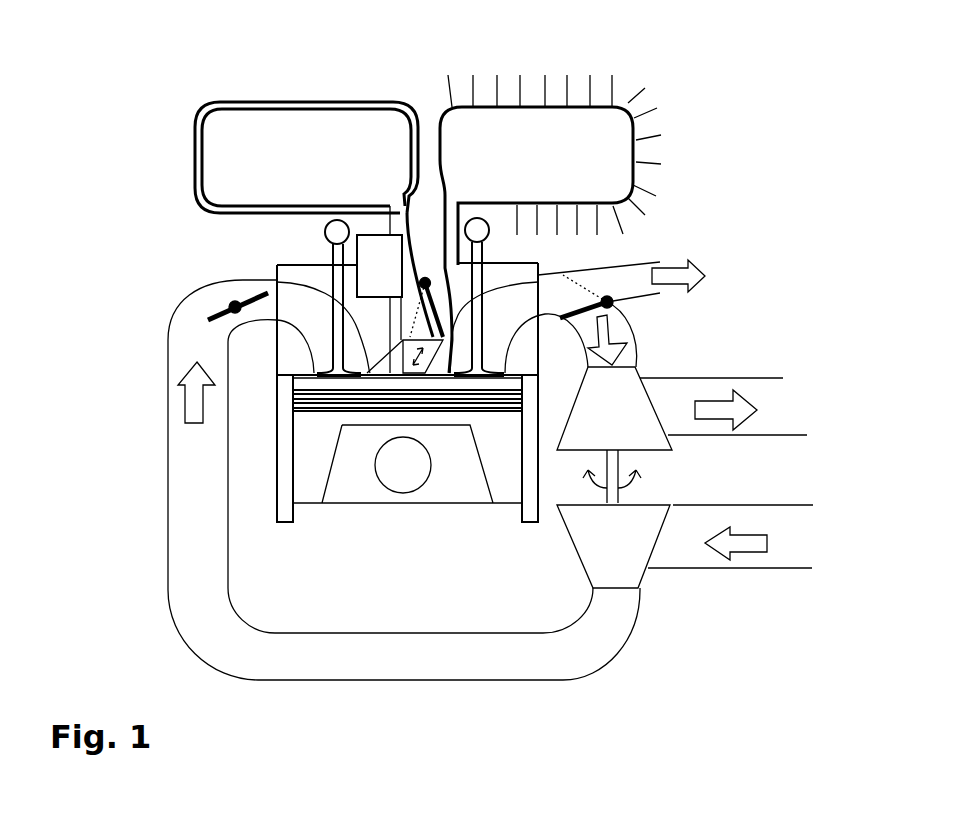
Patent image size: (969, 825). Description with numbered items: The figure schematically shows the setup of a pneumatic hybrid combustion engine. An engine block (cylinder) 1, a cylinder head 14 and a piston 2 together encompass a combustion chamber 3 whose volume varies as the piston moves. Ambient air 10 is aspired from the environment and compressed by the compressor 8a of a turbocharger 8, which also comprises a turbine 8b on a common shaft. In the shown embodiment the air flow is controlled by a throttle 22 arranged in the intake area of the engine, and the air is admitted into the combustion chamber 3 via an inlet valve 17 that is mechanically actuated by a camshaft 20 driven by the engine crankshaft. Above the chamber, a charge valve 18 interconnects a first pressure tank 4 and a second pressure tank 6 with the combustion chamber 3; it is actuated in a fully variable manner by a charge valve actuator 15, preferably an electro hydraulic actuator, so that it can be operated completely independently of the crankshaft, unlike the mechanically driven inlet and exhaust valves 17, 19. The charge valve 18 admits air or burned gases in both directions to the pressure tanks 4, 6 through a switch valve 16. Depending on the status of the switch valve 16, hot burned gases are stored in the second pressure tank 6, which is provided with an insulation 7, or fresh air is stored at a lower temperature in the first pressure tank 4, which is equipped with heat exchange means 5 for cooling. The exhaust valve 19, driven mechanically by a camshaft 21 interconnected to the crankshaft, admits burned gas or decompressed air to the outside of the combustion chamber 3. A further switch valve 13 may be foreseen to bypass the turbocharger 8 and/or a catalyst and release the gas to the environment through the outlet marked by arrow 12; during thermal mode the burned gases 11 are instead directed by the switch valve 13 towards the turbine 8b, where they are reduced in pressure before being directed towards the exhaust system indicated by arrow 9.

The engine block 1 is at (283, 487).
The piston 2 is at (505, 477).
The combustion chamber 3 is at (315, 382).
The first pressure tank 4 is at (597, 128).
The heat exchange means 5 is at (628, 205).
The second pressure tank 6 is at (232, 145).
The insulation 7 is at (203, 105).
The turbocharger 8 is at (622, 476).
The compressor 8a is at (638, 545).
The turbine 8b is at (623, 430).
The exhaust system 9 is at (752, 412).
The ambient air 10 is at (768, 548).
The burned gases 11 is at (610, 348).
The bypass outlet 12 is at (705, 278).
The switch valve 13 is at (600, 315).
The cylinder head 14 is at (293, 350).
The charge valve actuator 15 is at (367, 253).
The switch valve 16 is at (427, 283).
The inlet valve 17 is at (330, 377).
The charge valve 18 is at (395, 377).
The exhaust valve 19 is at (483, 377).
The camshaft 20 is at (333, 228).
The camshaft 21 is at (478, 228).
The throttle 22 is at (233, 307).